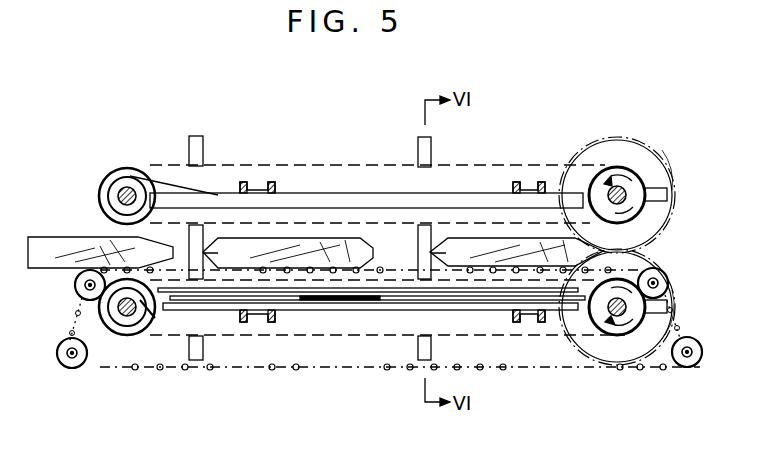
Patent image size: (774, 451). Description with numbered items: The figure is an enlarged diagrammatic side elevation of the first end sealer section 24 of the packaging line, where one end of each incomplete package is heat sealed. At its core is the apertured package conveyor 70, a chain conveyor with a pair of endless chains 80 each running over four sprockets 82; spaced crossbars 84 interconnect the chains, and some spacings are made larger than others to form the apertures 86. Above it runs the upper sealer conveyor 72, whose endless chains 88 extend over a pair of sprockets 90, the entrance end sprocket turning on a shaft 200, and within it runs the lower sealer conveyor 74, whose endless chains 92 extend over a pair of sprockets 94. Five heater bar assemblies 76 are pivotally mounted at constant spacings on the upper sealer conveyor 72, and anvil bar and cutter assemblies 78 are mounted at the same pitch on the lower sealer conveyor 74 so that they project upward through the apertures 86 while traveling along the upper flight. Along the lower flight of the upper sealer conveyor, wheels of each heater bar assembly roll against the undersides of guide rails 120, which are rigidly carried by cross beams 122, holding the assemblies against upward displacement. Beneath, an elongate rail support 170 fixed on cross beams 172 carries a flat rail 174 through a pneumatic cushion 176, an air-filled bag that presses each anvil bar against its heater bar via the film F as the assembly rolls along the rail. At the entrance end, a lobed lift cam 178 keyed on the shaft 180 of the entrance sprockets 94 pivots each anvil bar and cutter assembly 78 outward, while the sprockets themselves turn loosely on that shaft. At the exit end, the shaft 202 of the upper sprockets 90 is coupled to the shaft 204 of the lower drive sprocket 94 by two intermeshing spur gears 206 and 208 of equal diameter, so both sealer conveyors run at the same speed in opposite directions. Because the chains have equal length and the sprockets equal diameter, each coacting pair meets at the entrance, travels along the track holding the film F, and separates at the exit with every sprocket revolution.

The first end sealer section 24 is at (160, 112).
The apertured package conveyor 70 is at (62, 319).
The upper sealer conveyor 72 is at (374, 165).
The lower sealer conveyor 74 is at (489, 343).
The heater bar assemblies 76 is at (199, 135).
The anvil bar and cutter assemblies 78 is at (204, 352).
The endless chains 80 is at (103, 370).
The sprockets 82 is at (75, 285).
The crossbars 84 is at (274, 370).
The apertures 86 is at (406, 270).
The endless chains 88 is at (306, 165).
The sprockets 90 is at (100, 188).
The endless chains 92 is at (350, 338).
The sprockets 94 is at (116, 322).
The guide rails 120 is at (328, 212).
The cross beams 122 is at (248, 183).
The elongate rail support 170 is at (308, 293).
The cross beams 172 is at (260, 325).
The flat rail 174 is at (372, 300).
The pneumatic cushion 176 is at (360, 302).
The lift cam 178 is at (152, 320).
The shaft 180 is at (130, 310).
The roller shaft 200 is at (130, 190).
The shaft 202 is at (610, 192).
The shaft 204 is at (612, 305).
The spur gear 206 is at (678, 183).
The spur gear 208 is at (686, 298).
The film F is at (55, 245).